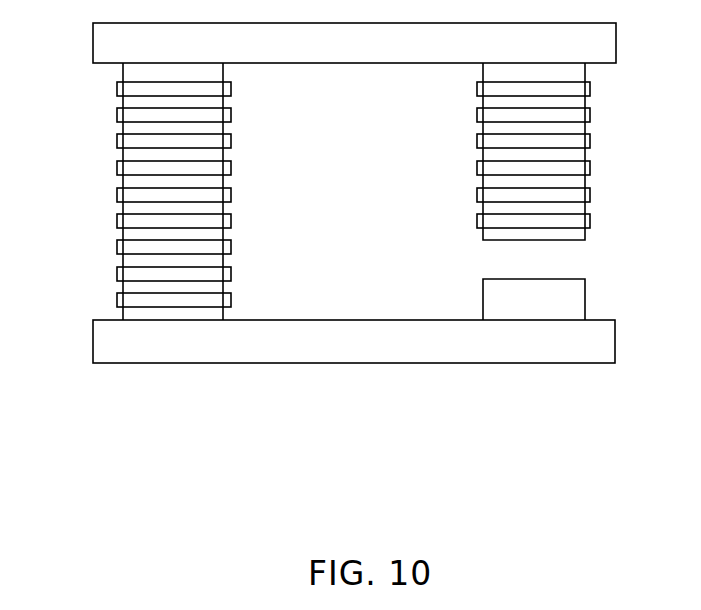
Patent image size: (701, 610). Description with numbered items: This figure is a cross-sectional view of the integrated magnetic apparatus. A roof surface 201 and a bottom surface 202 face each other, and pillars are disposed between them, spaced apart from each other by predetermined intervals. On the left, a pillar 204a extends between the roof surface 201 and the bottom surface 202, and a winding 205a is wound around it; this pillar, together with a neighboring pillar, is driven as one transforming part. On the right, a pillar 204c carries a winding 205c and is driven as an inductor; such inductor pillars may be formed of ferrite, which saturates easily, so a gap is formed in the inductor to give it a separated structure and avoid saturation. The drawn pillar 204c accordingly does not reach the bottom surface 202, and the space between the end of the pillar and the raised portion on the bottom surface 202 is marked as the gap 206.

The roof surface 201 is at (603, 43).
The bottom surface 202 is at (603, 340).
The pillar 204a is at (126, 72).
The winding 205a is at (120, 90).
The pillar 204c is at (577, 72).
The winding 205c is at (590, 90).
The gap between via electrode and pad 206 is at (556, 258).